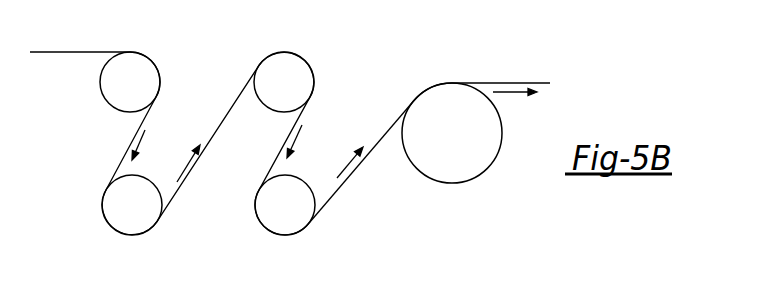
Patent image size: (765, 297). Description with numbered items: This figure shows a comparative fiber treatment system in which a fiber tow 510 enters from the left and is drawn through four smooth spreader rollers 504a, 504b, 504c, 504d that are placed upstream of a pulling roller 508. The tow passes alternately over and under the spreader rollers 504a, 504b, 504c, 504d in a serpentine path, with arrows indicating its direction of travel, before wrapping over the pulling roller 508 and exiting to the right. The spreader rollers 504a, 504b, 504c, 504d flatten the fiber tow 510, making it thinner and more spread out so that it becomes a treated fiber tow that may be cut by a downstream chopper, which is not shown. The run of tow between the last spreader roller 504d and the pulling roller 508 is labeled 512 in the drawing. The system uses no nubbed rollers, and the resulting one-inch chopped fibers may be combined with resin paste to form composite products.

The smooth spreader roller 504a is at (144, 93).
The smooth spreader roller 504b is at (146, 218).
The smooth spreader roller 504c is at (296, 92).
The smooth spreader roller 504d is at (298, 220).
The pulling roller 508 is at (461, 142).
The fiber tow 510 is at (77, 50).
The web segment 512 is at (377, 147).